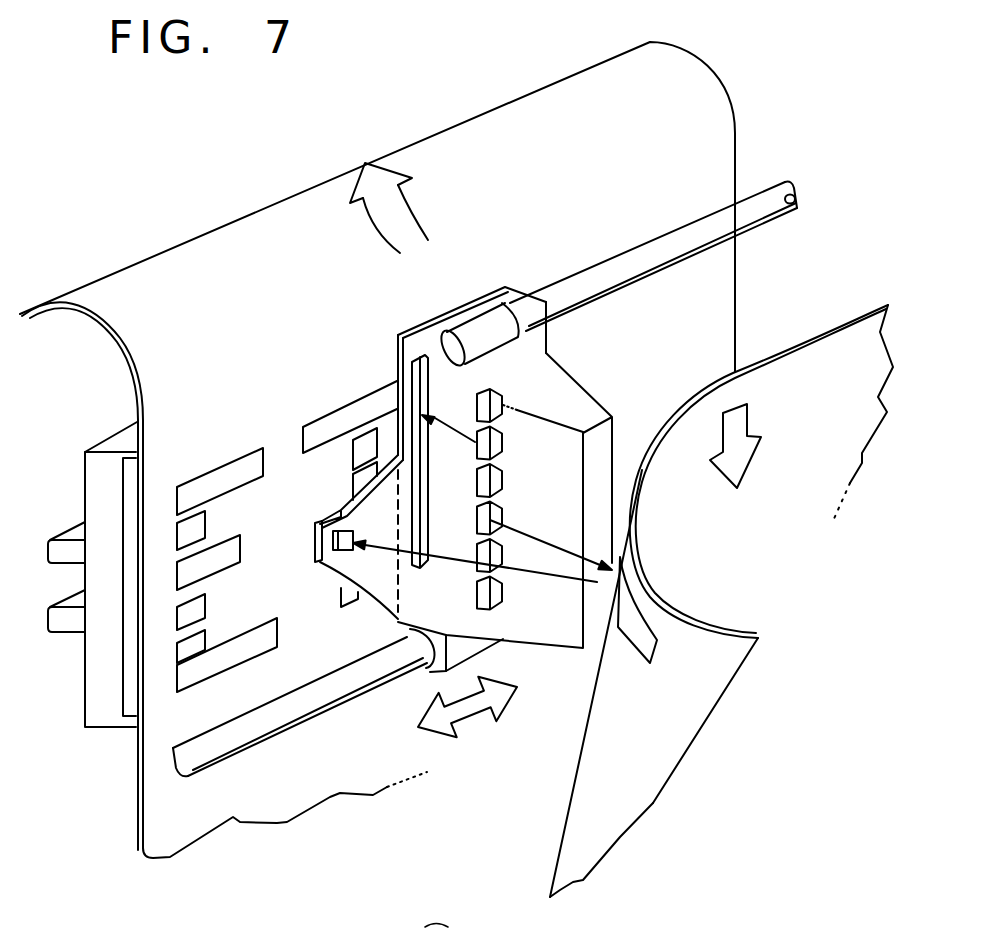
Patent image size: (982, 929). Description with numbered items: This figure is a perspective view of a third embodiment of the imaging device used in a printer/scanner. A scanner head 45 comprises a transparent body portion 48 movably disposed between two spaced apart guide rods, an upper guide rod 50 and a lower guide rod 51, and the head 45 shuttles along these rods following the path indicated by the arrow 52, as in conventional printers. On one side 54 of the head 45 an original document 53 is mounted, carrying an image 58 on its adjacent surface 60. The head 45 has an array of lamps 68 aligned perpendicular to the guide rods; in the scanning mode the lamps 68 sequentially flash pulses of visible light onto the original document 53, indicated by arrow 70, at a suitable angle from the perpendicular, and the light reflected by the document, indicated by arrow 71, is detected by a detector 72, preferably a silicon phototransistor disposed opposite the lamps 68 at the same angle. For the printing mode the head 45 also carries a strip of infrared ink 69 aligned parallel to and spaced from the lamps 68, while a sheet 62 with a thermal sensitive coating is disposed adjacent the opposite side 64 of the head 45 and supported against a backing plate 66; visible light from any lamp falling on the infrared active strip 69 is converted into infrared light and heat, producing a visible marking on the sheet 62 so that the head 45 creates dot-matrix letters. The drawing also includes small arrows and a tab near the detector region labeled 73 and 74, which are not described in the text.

The scanner head 45 is at (447, 760).
The body portion 48 is at (552, 348).
The upper guide rod 50 is at (767, 213).
The lower guide rod 51 is at (213, 750).
The arrow 52 is at (467, 707).
The original document 53 is at (620, 807).
The side 54 is at (607, 428).
The image 58 is at (647, 620).
The adjacent surface 60 is at (713, 663).
The sheet 62 is at (713, 157).
The side 64 is at (473, 302).
The backing plate 66 is at (98, 713).
The array of lamps 68 is at (500, 482).
The strip of infrared ink 69 is at (421, 357).
The arrow 70 is at (500, 524).
The arrow 71 is at (540, 573).
The detector 72 is at (312, 560).
The direction arrow 73 is at (465, 436).
The tab 74 is at (317, 543).